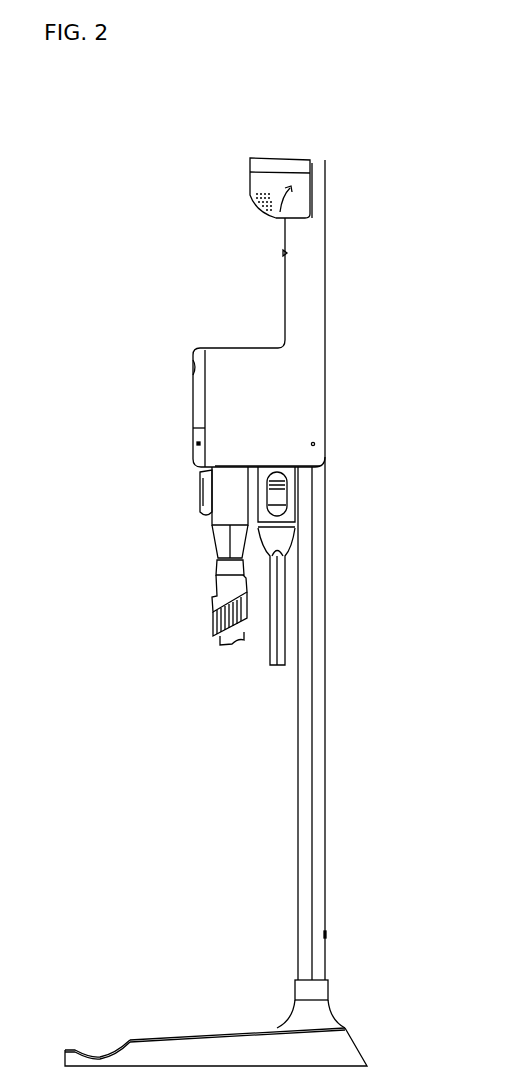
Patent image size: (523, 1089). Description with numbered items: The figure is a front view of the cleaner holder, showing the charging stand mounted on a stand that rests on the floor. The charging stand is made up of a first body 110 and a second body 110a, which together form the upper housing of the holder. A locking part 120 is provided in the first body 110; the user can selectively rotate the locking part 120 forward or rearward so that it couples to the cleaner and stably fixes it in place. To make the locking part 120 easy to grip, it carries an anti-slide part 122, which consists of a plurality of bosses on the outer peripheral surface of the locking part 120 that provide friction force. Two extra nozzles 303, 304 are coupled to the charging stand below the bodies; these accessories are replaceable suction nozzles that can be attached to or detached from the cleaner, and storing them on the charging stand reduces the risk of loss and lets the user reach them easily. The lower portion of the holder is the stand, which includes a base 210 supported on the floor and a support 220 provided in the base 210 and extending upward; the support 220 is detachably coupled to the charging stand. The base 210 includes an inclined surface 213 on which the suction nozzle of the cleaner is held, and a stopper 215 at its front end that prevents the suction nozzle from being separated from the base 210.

The first body 110 is at (305, 410).
The second body 110a is at (222, 399).
The locking part 120 is at (283, 168).
The anti-slide part 122 is at (258, 200).
The support 220 is at (317, 817).
The base 210 is at (350, 1043).
The inclined surface 213 is at (178, 1037).
The stopper 215 is at (67, 1050).
The extra nozzle 303 is at (218, 542).
The extra nozzle 304 is at (282, 610).